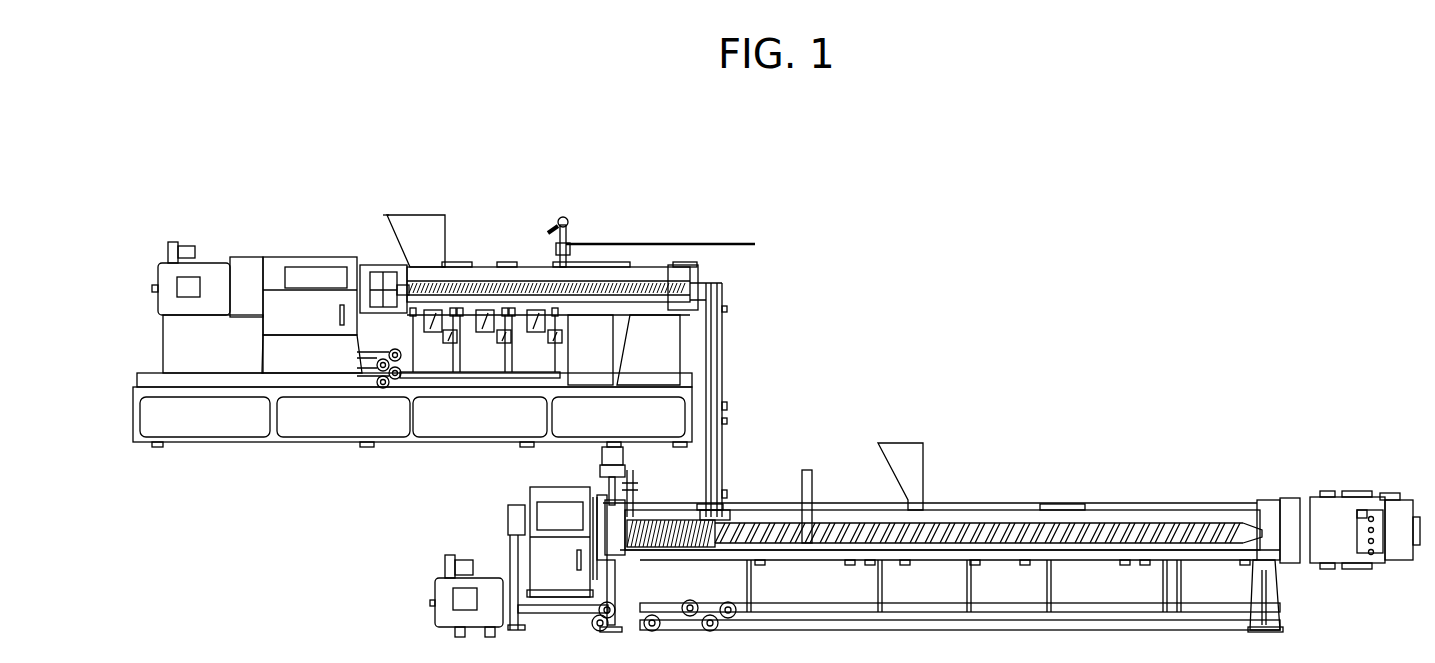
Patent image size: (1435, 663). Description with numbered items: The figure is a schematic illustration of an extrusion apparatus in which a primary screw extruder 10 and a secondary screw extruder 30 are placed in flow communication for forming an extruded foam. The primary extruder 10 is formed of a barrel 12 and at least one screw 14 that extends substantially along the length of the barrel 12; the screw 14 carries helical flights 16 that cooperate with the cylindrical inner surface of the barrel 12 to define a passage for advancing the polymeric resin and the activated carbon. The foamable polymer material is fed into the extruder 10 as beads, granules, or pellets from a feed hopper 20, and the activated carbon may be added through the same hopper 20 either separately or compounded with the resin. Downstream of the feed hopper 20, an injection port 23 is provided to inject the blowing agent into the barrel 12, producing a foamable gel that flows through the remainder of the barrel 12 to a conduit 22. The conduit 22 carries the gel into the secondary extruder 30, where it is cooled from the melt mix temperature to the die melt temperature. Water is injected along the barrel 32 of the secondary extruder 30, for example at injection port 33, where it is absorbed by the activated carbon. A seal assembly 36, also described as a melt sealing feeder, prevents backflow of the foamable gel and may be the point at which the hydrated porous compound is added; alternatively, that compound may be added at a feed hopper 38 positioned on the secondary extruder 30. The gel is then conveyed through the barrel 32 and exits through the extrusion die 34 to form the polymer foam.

The primary screw extruder 10 is at (308, 166).
The barrel 12 is at (480, 266).
The screw 14 is at (640, 278).
The helical flights 16 is at (420, 268).
The feed hopper 20 is at (450, 214).
The conduit 22 is at (723, 363).
The injection port 23 is at (578, 258).
The secondary screw extruder 30 is at (1123, 463).
The barrel 32 is at (998, 506).
The injection port 33 is at (813, 470).
The extrusion die 34 is at (1356, 496).
The seal assembly 36 is at (600, 456).
The feed hopper 38 is at (924, 464).